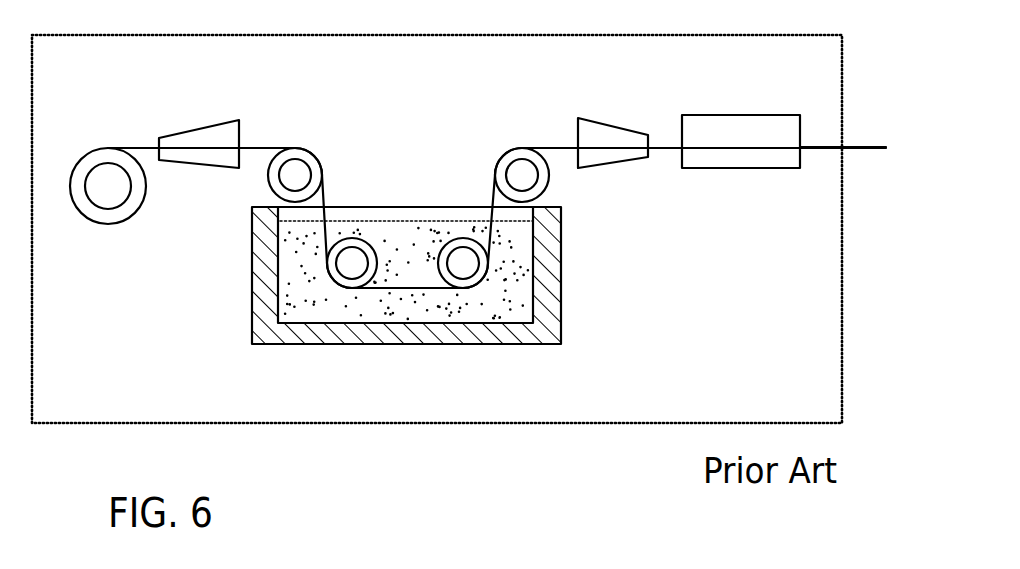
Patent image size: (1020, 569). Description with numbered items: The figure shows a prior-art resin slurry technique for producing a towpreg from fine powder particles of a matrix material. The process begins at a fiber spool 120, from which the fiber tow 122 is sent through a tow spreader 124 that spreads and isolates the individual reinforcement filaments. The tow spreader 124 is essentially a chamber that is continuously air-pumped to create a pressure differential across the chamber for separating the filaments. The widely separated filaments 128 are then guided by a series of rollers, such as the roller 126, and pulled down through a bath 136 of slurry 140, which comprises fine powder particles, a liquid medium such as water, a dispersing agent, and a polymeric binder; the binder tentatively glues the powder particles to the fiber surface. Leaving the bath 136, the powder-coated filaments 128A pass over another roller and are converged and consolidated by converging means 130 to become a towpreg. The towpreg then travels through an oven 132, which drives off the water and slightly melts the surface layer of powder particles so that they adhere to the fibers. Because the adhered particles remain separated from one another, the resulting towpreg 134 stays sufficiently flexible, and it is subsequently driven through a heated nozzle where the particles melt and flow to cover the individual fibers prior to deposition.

The fiber spool 120 is at (130, 213).
The fiber tow 122 is at (140, 149).
The tow spreader 124 is at (212, 140).
The roller 126 is at (297, 170).
The widely separated filaments 128 is at (257, 148).
The powder-coated filaments 128A is at (555, 145).
The converging means 130 is at (622, 135).
The oven 132 is at (775, 130).
The towpreg 134 is at (830, 146).
The bath 136 is at (423, 343).
The slurry 140 is at (297, 281).